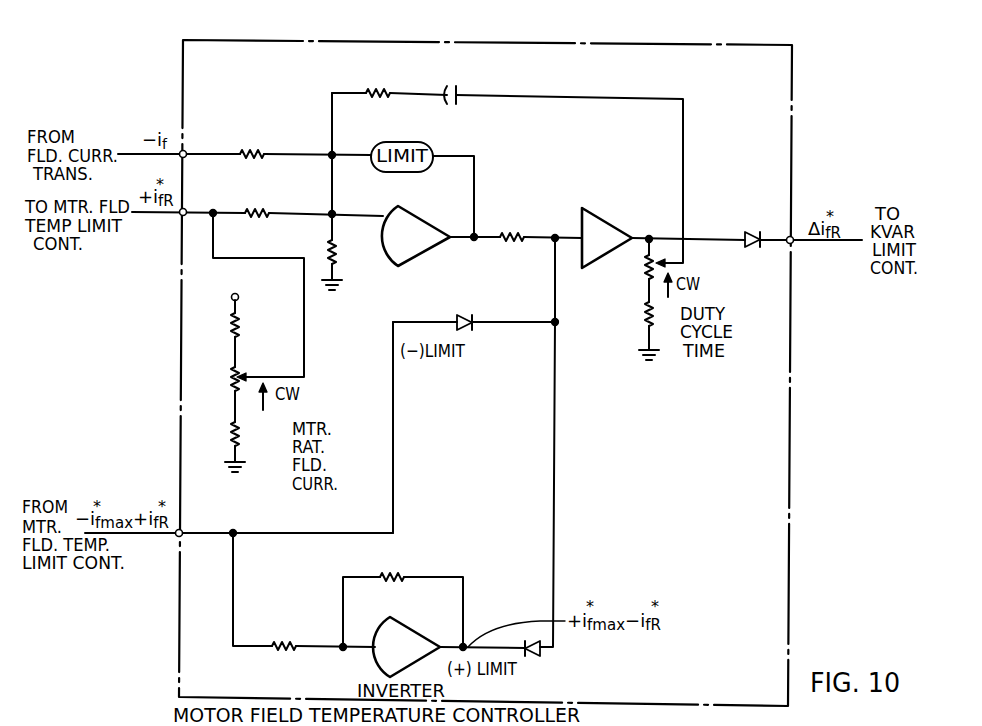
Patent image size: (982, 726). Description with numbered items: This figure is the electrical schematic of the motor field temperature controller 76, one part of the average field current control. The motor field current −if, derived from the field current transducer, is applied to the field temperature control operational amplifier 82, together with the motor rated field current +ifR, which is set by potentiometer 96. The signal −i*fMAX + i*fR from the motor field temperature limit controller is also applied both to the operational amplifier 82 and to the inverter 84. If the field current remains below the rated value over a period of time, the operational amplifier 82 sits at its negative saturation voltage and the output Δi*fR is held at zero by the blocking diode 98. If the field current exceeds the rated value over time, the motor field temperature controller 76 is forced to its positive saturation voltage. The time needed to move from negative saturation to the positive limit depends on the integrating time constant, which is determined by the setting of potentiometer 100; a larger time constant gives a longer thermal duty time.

The motor field temperature controller 76 is at (772, 101).
The field temperature control operational amplifier 82 is at (413, 256).
The inverter 84 is at (378, 655).
The potentiometer 96 is at (233, 320).
The blocking diode 98 is at (753, 250).
The potentiometer 100 is at (645, 262).